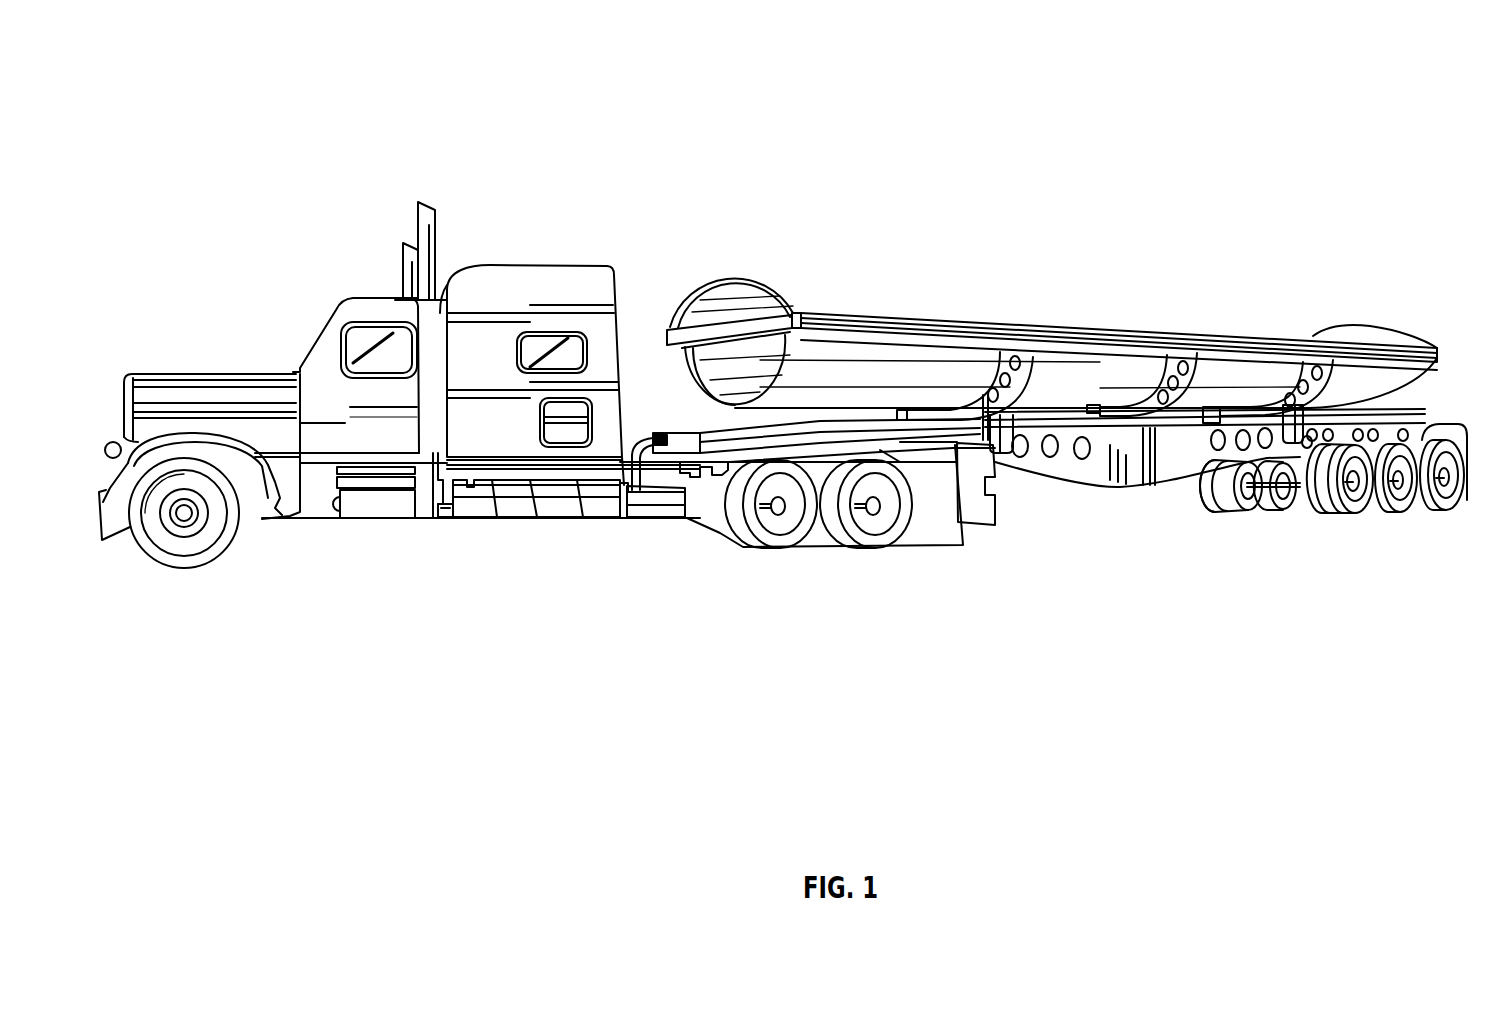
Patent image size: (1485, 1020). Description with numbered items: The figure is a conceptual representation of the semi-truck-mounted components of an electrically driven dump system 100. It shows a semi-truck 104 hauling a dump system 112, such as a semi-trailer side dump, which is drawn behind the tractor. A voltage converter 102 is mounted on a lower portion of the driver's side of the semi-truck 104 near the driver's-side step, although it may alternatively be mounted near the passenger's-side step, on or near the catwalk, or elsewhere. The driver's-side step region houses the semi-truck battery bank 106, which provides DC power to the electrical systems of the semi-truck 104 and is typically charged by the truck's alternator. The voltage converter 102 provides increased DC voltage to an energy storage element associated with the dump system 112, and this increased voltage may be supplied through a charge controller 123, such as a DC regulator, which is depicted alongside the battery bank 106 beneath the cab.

The electrically driven dump system 100 is at (545, 122).
The voltage converter 102 is at (443, 522).
The semi-truck 104 is at (590, 282).
The semi-truck battery bank 106 is at (473, 507).
The dump system 112 is at (1112, 362).
The charge controller 123 is at (557, 507).